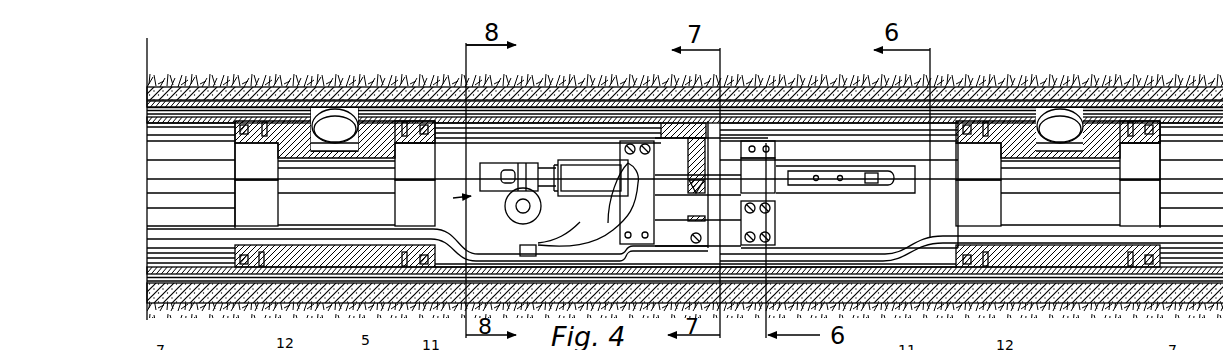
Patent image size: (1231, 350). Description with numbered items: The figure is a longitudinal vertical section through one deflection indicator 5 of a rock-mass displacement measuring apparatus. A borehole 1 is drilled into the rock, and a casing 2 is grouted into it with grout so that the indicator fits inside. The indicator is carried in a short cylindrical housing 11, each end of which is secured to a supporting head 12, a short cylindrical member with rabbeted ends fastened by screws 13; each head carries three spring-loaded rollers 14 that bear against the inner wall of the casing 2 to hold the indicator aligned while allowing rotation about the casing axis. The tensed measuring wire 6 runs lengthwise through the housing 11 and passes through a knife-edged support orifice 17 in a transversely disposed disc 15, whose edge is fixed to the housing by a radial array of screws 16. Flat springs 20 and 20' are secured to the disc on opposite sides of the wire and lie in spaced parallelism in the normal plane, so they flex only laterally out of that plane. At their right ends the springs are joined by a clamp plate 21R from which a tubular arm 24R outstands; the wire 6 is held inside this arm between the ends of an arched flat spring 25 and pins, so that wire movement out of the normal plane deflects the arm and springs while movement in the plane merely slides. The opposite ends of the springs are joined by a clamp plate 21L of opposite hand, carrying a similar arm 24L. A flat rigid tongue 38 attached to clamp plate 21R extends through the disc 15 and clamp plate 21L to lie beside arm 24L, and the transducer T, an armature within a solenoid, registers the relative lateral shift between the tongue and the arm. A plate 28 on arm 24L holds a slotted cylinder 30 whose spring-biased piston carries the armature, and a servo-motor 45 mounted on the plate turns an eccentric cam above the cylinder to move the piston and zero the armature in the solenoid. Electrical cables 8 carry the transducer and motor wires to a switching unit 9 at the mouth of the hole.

The borehole 1 is at (186, 74).
The casing 2 is at (140, 92).
The deflection indicator 5 is at (431, 61).
The wire 6 is at (206, 172).
The electrical cable 8 is at (323, 228).
The switching unit 9 is at (211, 77).
The cylindrical housing 11 is at (528, 116).
The supporting head 12 is at (274, 108).
The screws 13 is at (398, 110).
The spring-loaded rollers 14 is at (328, 112).
The disc 15 is at (692, 116).
The screws 16 is at (668, 116).
The support orifice 17 is at (682, 177).
The flat spring 20 is at (711, 192).
The flat spring 20' is at (774, 223).
The clamp plate 21L is at (607, 221).
The clamp plate 21R is at (772, 182).
The arm 24L is at (488, 163).
The tubular arm 24R is at (896, 177).
The arched flat spring 25 is at (843, 162).
The plate 28 is at (531, 155).
The cylinder 30 is at (505, 209).
The tongue 38 is at (568, 210).
The servo-motor 45 is at (574, 164).
The transducer T is at (454, 200).